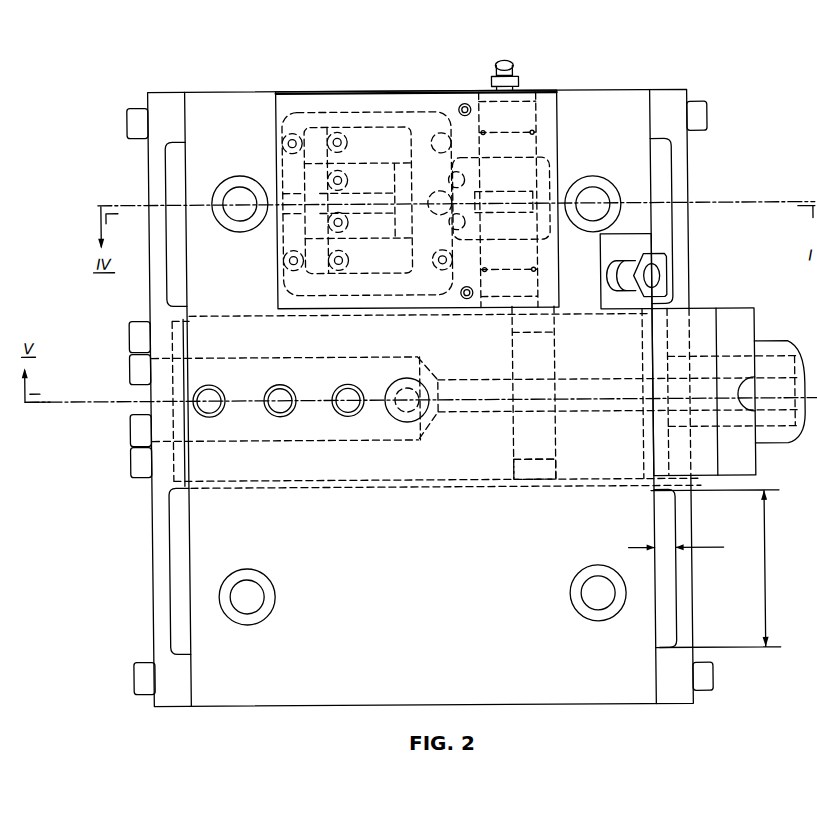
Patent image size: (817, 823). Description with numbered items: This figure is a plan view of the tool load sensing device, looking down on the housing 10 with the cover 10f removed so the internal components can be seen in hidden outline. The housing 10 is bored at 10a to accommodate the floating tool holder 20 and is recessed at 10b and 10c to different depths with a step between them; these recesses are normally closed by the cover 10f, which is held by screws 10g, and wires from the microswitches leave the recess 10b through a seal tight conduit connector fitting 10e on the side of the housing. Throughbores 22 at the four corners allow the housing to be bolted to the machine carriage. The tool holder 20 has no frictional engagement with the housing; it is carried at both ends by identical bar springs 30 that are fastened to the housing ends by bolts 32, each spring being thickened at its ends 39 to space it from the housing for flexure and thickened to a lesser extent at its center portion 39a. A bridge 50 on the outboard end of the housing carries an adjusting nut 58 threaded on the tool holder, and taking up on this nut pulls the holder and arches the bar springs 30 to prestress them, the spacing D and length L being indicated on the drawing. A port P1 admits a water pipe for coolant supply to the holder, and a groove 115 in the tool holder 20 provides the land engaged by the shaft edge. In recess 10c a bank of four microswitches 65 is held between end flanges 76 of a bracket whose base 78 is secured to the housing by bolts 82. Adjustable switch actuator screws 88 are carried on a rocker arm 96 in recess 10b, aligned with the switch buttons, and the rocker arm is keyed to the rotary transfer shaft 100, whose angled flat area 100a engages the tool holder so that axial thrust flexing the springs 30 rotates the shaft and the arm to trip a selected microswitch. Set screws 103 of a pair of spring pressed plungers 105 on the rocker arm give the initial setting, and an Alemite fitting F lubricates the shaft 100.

The housing 10 is at (203, 91).
The bore 10a is at (266, 490).
The recess 10b is at (283, 290).
The recess 10c is at (468, 255).
The conduit connector fitting 10e is at (662, 279).
The cover 10f is at (405, 102).
The screws 10g is at (466, 103).
The tool holder 20 is at (427, 460).
The throughbores 22 is at (241, 196).
The bar springs 30 is at (166, 582).
The bolts 32 is at (710, 117).
The thickened ends 39 is at (650, 116).
The center portion 39a is at (665, 486).
The bridge 50 is at (732, 480).
The adjusting nut 58 is at (767, 446).
The microswitches 65 is at (378, 148).
The end flanges 76 is at (322, 120).
The base 78 is at (297, 120).
The bolts 82 is at (286, 263).
The switch actuator screws 88 is at (351, 100).
The rocker arm 96 is at (370, 238).
The rotary transfer shaft 100 is at (533, 103).
The flat area 100a is at (536, 356).
The set screws 103 is at (466, 184).
The spring pressed plungers 105 is at (466, 224).
The groove 115 is at (535, 467).
The Alemite fitting F is at (511, 58).
The port P1 is at (402, 406).
The dimension D is at (685, 549).
The dimension L is at (716, 569).